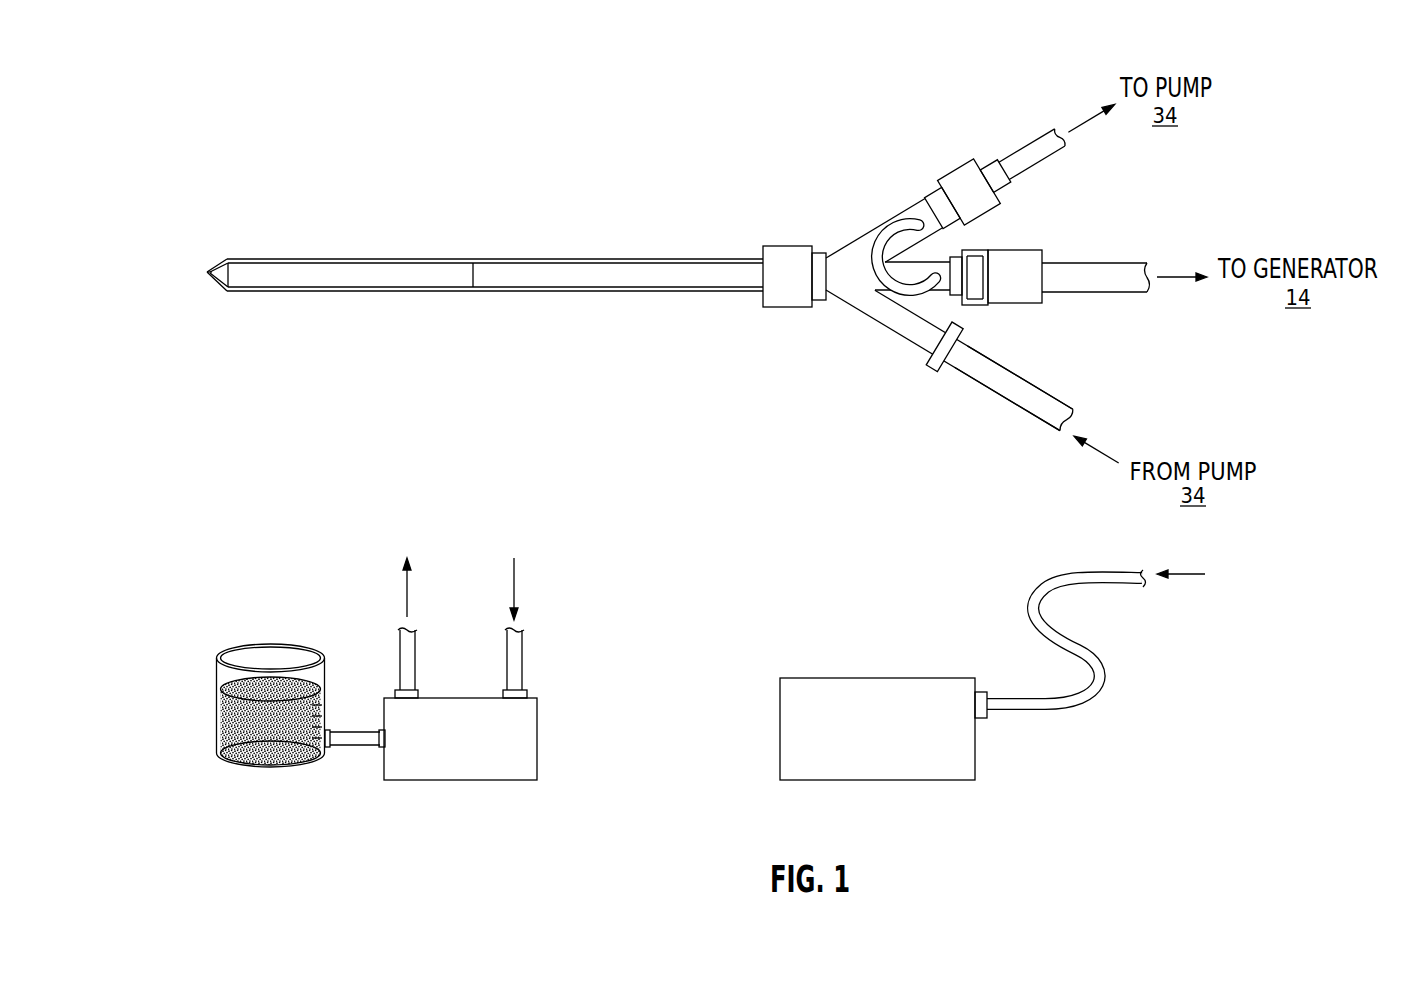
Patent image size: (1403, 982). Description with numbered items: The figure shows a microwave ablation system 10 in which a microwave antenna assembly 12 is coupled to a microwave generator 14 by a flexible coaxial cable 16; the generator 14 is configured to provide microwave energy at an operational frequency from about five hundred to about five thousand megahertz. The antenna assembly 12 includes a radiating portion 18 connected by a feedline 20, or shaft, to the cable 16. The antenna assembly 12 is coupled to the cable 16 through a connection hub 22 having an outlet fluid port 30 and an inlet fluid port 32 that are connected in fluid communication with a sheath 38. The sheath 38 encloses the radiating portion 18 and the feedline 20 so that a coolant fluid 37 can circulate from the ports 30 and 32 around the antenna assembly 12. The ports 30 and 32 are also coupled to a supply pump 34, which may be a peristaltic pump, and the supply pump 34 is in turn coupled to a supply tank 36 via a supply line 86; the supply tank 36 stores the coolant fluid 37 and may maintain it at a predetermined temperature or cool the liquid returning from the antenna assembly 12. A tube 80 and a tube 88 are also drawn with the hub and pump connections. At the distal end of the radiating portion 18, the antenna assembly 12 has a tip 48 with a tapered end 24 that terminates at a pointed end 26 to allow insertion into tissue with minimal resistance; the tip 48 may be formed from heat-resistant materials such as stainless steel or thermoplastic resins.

The microwave ablation system 10 is at (311, 120).
The microwave antenna assembly 12 is at (706, 197).
The microwave generator 14 is at (865, 756).
The flexible coaxial cable 16 is at (1090, 262).
The radiating portion 18 is at (334, 259).
The feedline 20 is at (590, 259).
The connection hub 22 is at (862, 340).
The tapered end 24 is at (226, 263).
The pointed end 26 is at (209, 273).
The outlet fluid port 30 is at (963, 178).
The inlet fluid port 32 is at (927, 367).
The supply pump 34 is at (448, 764).
The supply tank 36 is at (218, 704).
The coolant fluid 37 is at (224, 733).
The sheath 38 is at (749, 259).
The tip 48 is at (222, 286).
The looped tube 80 is at (900, 233).
The supply line 86 is at (1008, 397).
The inflow tube 88 is at (1038, 150).